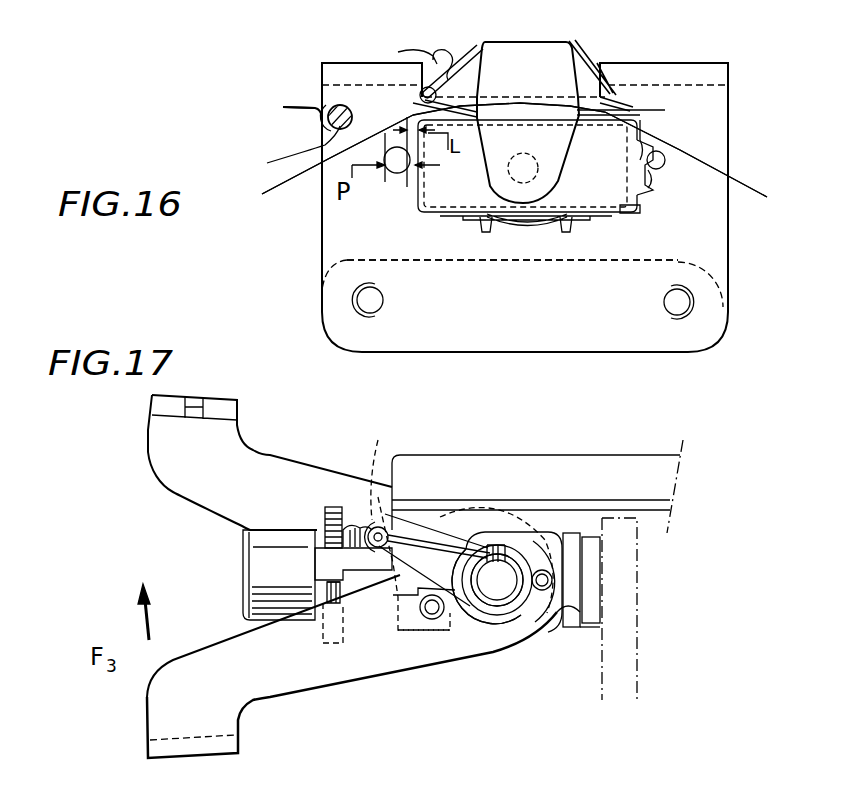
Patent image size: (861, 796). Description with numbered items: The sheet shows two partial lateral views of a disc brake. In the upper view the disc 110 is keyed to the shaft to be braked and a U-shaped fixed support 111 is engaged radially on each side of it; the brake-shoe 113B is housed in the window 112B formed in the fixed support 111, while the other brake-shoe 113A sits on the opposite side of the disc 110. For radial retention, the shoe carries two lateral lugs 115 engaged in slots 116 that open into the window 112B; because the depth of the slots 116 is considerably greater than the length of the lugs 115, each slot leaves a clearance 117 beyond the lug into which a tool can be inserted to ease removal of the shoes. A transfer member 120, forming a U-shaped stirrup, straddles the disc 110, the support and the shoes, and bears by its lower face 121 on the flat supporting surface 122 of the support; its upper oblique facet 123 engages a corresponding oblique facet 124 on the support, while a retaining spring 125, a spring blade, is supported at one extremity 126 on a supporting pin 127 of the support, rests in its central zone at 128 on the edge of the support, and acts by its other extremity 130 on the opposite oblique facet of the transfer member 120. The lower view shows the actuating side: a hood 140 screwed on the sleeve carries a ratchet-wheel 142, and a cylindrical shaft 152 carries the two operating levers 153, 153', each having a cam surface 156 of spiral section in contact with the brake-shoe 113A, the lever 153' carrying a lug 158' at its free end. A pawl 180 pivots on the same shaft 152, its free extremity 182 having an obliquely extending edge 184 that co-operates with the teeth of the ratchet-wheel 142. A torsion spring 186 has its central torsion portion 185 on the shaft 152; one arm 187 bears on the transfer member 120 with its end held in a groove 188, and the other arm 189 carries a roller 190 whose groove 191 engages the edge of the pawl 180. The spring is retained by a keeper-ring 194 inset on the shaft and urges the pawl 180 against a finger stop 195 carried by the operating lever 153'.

In FIG. 16, the disc 110 is at (749, 172).
In FIG. 17, the disc 110 is at (645, 588).
In FIG. 16, the fixed support 111 is at (387, 360).
In FIG. 16, the window 112B is at (623, 212).
In FIG. 17, the brake-shoe 113A is at (596, 630).
In FIG. 16, the brake-shoe 113B is at (415, 190).
In FIG. 16, the lugs 115 is at (407, 195).
In FIG. 16, the slots 116 is at (398, 188).
In FIG. 16, the clearance 117 is at (390, 195).
In FIG. 16, the transfer member 120 is at (579, 44).
In FIG. 17, the transfer member 120 is at (649, 459).
In FIG. 16, the lower face 121 is at (642, 113).
In FIG. 16, the flat supporting surface 122 is at (522, 40).
In FIG. 16, the oblique facet 123 is at (463, 57).
In FIG. 16, the oblique facet 124 is at (607, 82).
In FIG. 16, the retaining spring 125 is at (298, 102).
In FIG. 16, the extremity 126 is at (288, 108).
In FIG. 16, the supporting pin 127 is at (282, 151).
In FIG. 16, the central support point 128 is at (423, 92).
In FIG. 16, the extremity 130 is at (420, 50).
In FIG. 17, the hood 140 is at (247, 537).
In FIG. 17, the ratchet-wheel 142 is at (331, 498).
In FIG. 17, the cylindrical shaft 152 is at (503, 598).
In FIG. 17, the operating lever 153 is at (270, 460).
In FIG. 17, the operating lever 153' is at (352, 670).
In FIG. 17, the cam surface 156 is at (577, 615).
In FIG. 16, the lug 158' is at (305, 97).
In FIG. 17, the pawl 180 is at (389, 604).
In FIG. 17, the free extremity 182 is at (325, 565).
In FIG. 17, the edge 184 is at (327, 603).
In FIG. 17, the central torsion portion 185 is at (560, 577).
In FIG. 17, the torsion spring 186 is at (477, 624).
In FIG. 17, the arm 187 is at (493, 515).
In FIG. 17, the groove 188 is at (453, 507).
In FIG. 17, the arm 189 is at (412, 648).
In FIG. 17, the roller 190 is at (403, 530).
In FIG. 17, the groove 191 is at (385, 473).
In FIG. 17, the keeper-ring 194 is at (519, 553).
In FIG. 17, the finger stop 195 is at (432, 620).